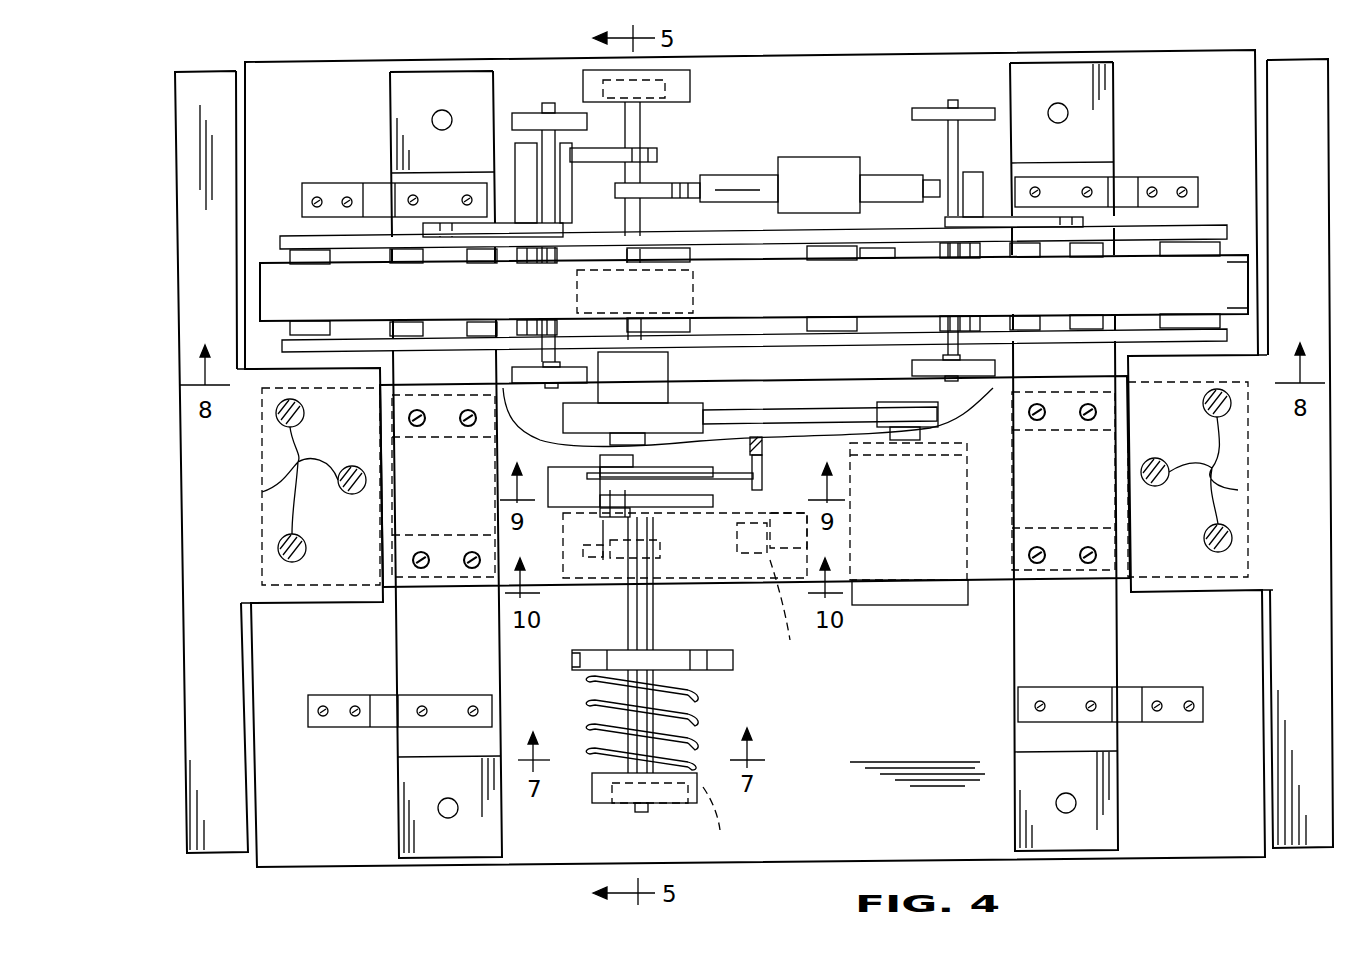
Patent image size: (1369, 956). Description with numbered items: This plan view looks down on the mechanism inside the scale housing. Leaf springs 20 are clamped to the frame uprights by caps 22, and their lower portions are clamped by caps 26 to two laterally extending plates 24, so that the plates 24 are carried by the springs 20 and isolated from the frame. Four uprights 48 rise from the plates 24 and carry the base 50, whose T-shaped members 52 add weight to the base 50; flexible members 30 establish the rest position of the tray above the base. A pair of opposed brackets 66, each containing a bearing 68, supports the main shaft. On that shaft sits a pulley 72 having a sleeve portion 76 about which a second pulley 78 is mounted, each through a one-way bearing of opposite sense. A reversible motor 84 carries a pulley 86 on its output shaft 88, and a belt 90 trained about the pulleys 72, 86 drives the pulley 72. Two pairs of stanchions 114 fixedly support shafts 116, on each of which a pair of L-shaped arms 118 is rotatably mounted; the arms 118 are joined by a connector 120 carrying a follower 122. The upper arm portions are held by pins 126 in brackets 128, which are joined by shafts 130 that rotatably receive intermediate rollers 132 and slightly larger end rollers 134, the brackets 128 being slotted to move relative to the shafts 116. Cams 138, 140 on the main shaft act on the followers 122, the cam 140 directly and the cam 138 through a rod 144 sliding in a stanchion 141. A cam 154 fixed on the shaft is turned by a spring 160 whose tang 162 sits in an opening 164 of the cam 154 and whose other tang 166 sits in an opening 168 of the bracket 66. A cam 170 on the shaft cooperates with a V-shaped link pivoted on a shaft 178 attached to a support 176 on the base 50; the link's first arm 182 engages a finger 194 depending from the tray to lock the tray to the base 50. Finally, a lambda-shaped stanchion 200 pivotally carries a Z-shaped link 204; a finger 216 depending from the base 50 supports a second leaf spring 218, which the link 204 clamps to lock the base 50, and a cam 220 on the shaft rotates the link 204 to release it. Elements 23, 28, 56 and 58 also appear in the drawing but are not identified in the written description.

The leaf spring 20 is at (378, 183).
The cap 22 is at (318, 695).
The screw 23 is at (353, 695).
The laterally extending plate 24 is at (397, 640).
The cap 26 is at (452, 695).
The screw 28 is at (478, 712).
The flexible member 30 is at (382, 119).
The upright 48 is at (420, 440).
The base 50 is at (1000, 592).
The T shaped member 52 is at (176, 282).
The mounting block 56 is at (270, 490).
The carriage block 58 is at (548, 470).
The bracket 66 is at (690, 80).
The bearing 68 is at (590, 82).
The pulley 72 is at (698, 415).
The sleeve portion 76 is at (668, 390).
The pulley 78 is at (693, 276).
The reversible motor 84 is at (948, 605).
The pulley 86 is at (895, 402).
The output shaft 88 is at (935, 440).
The belt 90 is at (850, 420).
The stanchion 114 is at (530, 110).
The shaft 116 is at (525, 190).
The L-shaped arm 118 is at (540, 232).
The connector 120 is at (522, 195).
The follower 122 is at (963, 172).
The pin 126 is at (425, 250).
The bracket 128 is at (387, 263).
The shaft 130 is at (445, 332).
The intermediate roller 132 is at (872, 256).
The end roller 134 is at (1237, 292).
The cam 138 is at (672, 183).
The cam 140 is at (658, 150).
The stanchion 141 is at (832, 157).
The rod 144 is at (752, 175).
The cam 154 is at (733, 668).
The spring 160 is at (690, 715).
The tang 162 is at (596, 686).
The opening 164 is at (572, 660).
The tang 166 is at (700, 775).
The opening 168 is at (708, 800).
The cam 170 is at (690, 535).
The support 176 is at (590, 476).
The shaft 178 is at (603, 520).
The first arm 182 is at (763, 475).
The finger 194 is at (757, 437).
The lambda shaped stanchion 200 is at (605, 565).
The Z shaped link 204 is at (766, 600).
The finger 216 is at (820, 545).
The second leaf spring 218 is at (783, 580).
The cam 220 is at (655, 560).